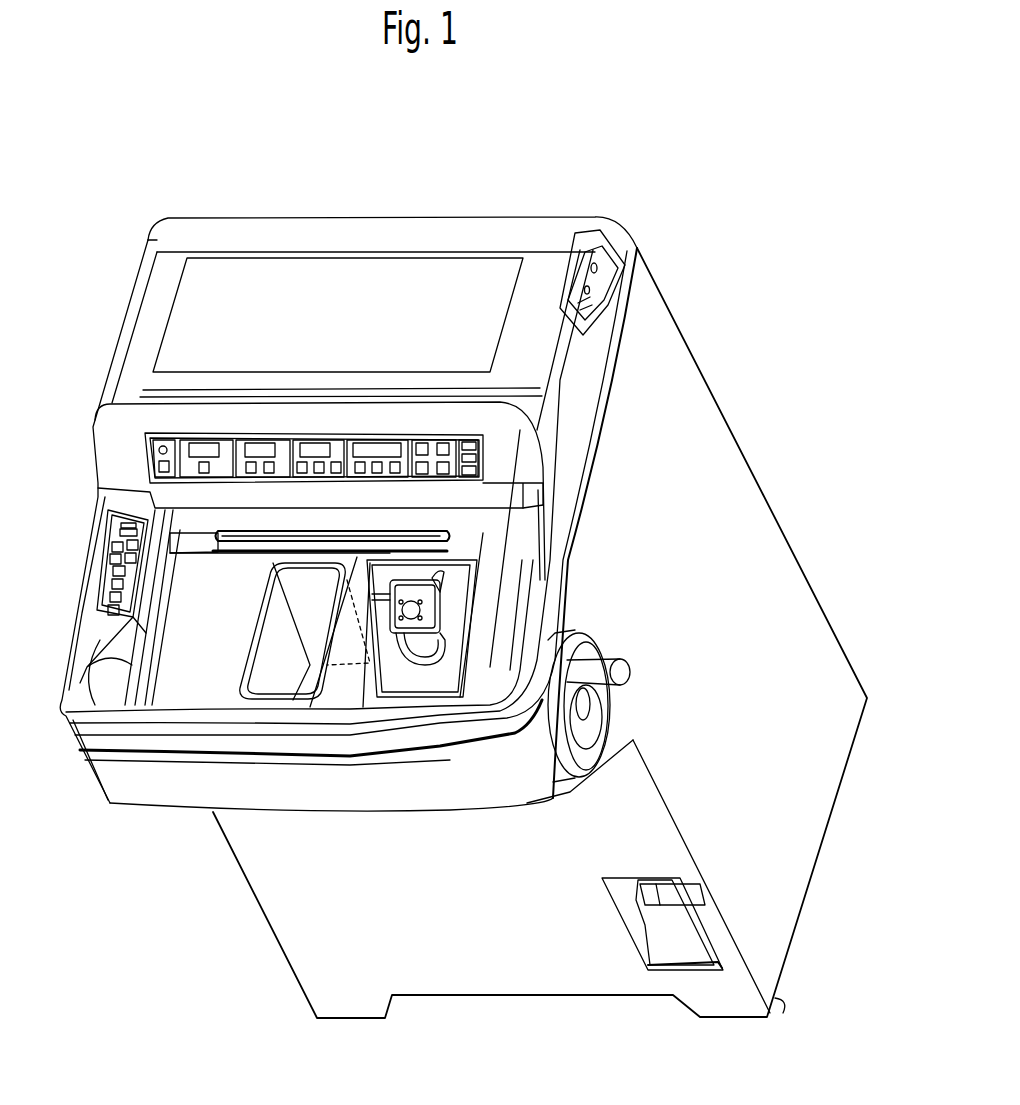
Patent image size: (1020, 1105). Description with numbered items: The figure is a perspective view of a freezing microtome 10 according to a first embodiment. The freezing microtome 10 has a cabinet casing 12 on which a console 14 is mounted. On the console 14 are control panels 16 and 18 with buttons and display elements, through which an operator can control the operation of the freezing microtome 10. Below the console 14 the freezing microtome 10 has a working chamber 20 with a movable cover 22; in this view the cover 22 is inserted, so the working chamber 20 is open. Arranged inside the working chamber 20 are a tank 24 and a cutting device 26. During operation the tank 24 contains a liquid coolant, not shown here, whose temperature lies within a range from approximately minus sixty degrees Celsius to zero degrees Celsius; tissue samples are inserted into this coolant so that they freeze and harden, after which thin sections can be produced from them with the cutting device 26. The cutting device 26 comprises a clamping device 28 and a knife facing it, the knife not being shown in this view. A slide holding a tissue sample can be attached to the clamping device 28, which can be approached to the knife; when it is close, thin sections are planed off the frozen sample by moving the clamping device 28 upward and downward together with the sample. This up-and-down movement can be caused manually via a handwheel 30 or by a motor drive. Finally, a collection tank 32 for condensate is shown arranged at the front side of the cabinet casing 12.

The freezing microtome 10 is at (708, 262).
The cabinet casing 12 is at (735, 482).
The console 14 is at (550, 222).
The control panel 16 is at (483, 437).
The control panel 18 is at (110, 573).
The working chamber 20 is at (195, 690).
The movable cover 22 is at (450, 540).
The tank 24 is at (275, 685).
The cutting device 26 is at (458, 610).
The clamping device 28 is at (410, 660).
The handwheel 30 is at (630, 670).
The collection tank 32 is at (693, 922).